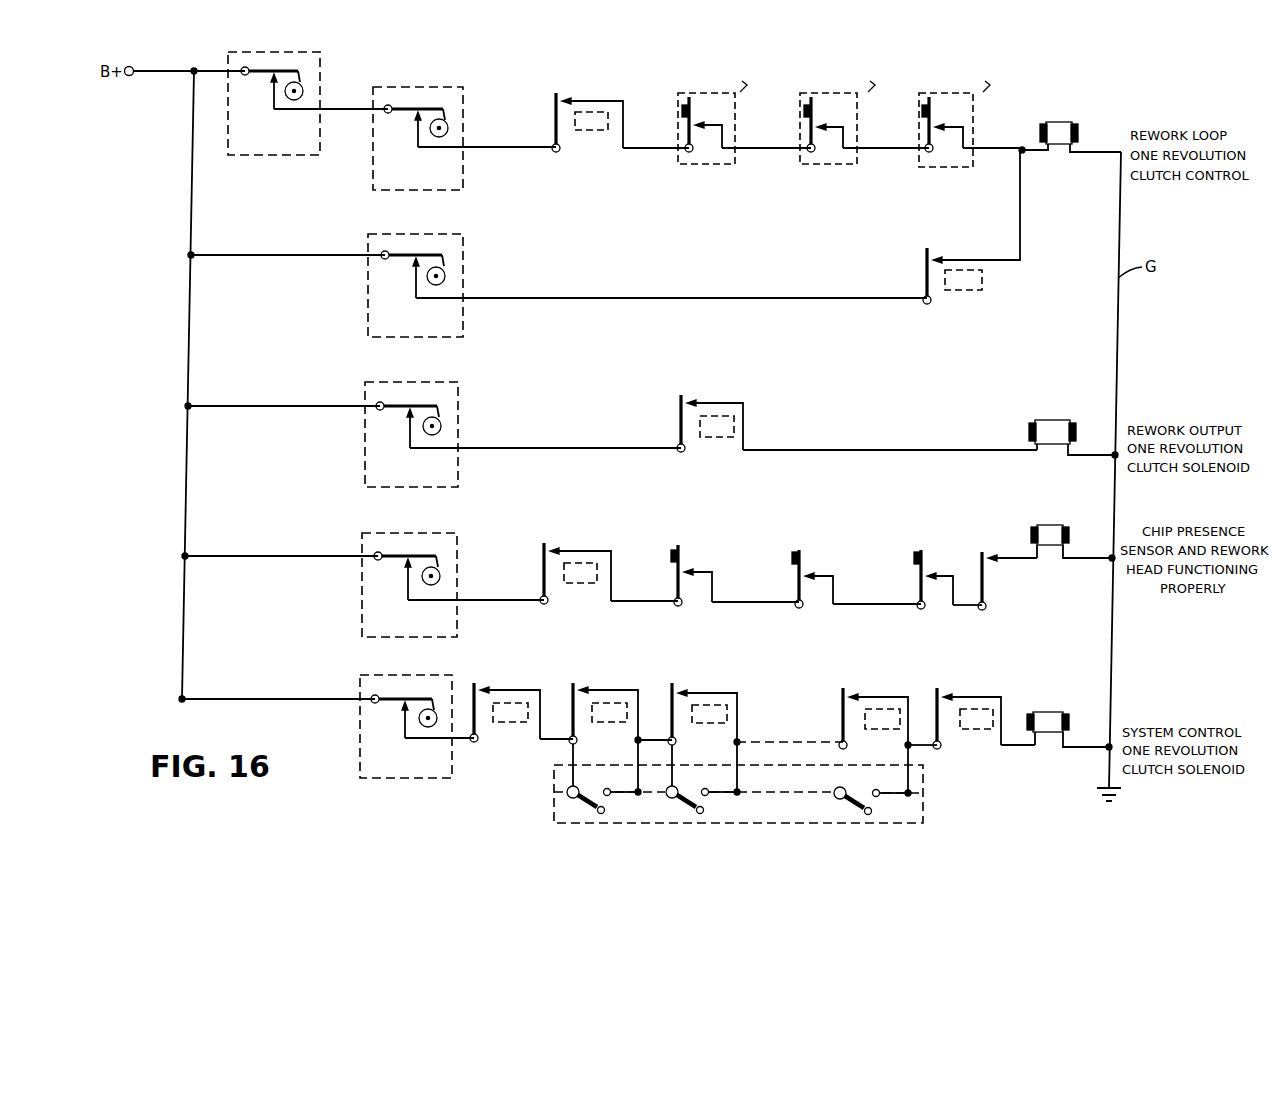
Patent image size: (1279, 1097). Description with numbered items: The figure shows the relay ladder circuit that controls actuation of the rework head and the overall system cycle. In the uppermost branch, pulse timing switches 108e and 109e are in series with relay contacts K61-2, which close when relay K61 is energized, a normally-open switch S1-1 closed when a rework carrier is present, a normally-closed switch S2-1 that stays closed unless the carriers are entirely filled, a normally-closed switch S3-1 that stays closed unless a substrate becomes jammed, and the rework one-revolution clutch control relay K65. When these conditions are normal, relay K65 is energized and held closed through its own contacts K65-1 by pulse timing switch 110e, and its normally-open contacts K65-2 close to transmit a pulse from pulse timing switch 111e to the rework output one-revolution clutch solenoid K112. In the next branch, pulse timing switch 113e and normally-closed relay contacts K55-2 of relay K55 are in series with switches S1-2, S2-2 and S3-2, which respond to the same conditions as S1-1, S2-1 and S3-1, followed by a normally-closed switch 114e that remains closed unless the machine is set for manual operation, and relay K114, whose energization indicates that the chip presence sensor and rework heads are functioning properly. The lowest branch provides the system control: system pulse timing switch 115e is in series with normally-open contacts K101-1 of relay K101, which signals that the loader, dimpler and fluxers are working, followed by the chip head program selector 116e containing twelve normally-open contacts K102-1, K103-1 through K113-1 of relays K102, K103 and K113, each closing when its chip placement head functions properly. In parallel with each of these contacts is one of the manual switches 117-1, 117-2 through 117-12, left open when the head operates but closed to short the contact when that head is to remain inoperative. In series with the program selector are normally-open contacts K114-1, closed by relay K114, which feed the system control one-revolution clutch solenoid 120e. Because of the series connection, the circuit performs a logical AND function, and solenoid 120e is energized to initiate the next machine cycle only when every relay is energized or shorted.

The pulse timing switch 108e is at (296, 52).
The pulse timing switch 109e is at (446, 87).
The pulse timing switch 110e is at (443, 234).
The pulse timing switch 111e is at (434, 382).
The pulse timing switch 113e is at (440, 533).
The system pulse timing switch 115e is at (440, 675).
The normally-closed switch 114e is at (990, 566).
The chip head program selector 116e is at (556, 796).
The switch 117-1 is at (606, 811).
The switch 117-2 is at (704, 811).
The switch 117-12 is at (883, 785).
The system control one-revolution clutch solenoid 120e is at (1048, 712).
The relay contacts K61-2 is at (560, 98).
The relay K61 is at (598, 138).
The normally-open switch S1-1 is at (700, 166).
The normally-closed switch S2-1 is at (824, 166).
The normally-closed switch S3-1 is at (942, 166).
The rework one-revolution clutch control relay K65 is at (1062, 123).
The relay contacts K65-1 is at (933, 256).
The normally-open relay contacts K65-2 is at (690, 400).
The rework output one revolution clutch solenoid K112 is at (1052, 420).
The normally-closed relay contacts K55-2 is at (550, 540).
The relay K55 coil K55 is at (578, 587).
The switch S1-2 is at (688, 560).
The switch S2-2 is at (808, 568).
The switch S3-2 is at (930, 568).
The relay K114 is at (1050, 525).
The normally-open relay contacts K101-1 is at (480, 690).
The relay K101 is at (520, 725).
The normally-open relay contacts K102-1 is at (582, 690).
The relay K102 coil K102 is at (623, 725).
The normally-open relay contacts K103-1 is at (680, 690).
The relay K103 coil K103 is at (730, 712).
The normally-open relay contacts K113-1 is at (850, 695).
The relay K113 coil K113 is at (865, 720).
The normally-open relay contacts K114-1 is at (945, 695).